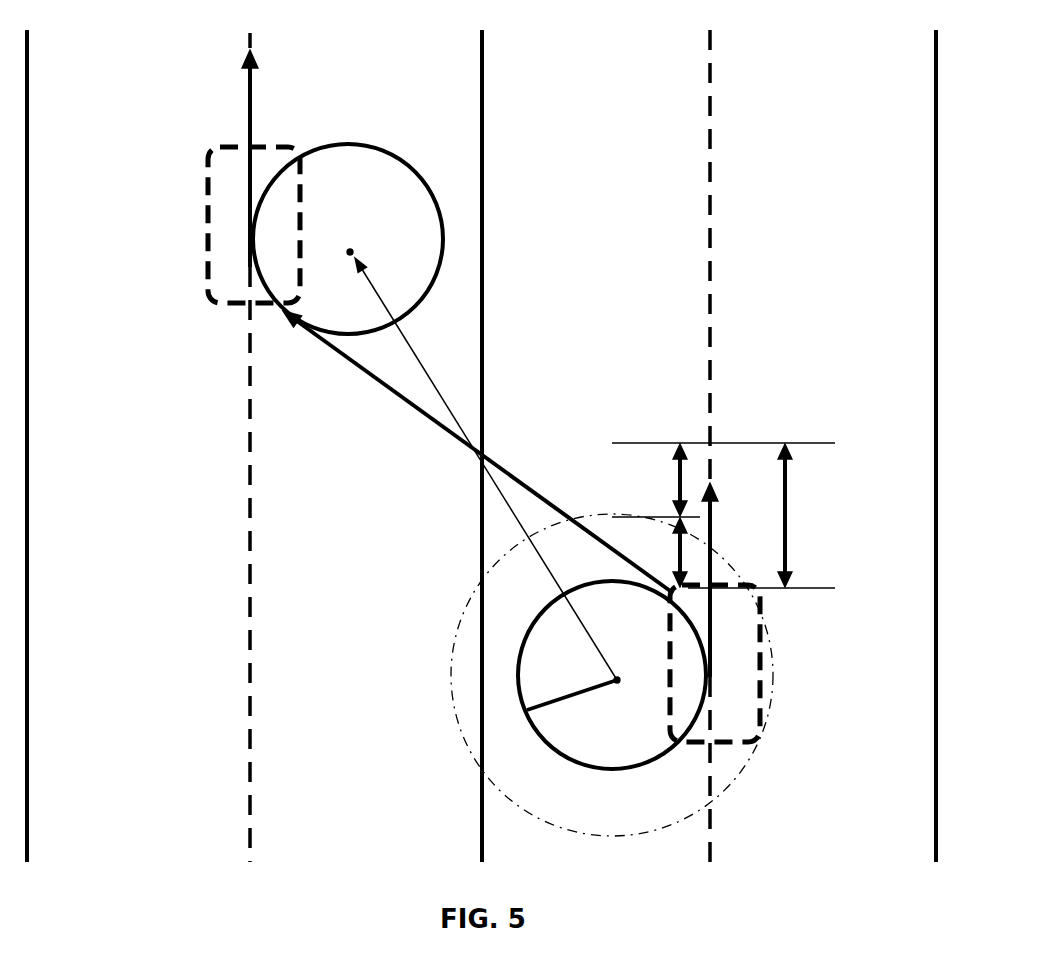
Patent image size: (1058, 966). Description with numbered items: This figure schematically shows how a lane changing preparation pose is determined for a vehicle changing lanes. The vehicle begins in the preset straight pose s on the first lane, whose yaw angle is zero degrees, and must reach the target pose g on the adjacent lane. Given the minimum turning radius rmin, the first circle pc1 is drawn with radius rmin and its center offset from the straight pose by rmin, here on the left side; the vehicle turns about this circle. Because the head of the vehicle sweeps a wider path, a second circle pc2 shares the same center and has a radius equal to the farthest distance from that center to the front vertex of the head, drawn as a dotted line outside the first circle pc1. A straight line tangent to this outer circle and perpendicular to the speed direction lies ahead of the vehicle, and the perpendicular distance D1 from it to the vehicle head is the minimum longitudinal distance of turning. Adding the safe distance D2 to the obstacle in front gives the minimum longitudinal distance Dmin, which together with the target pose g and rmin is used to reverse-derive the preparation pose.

The target pose g is at (167, 176).
The preset straight pose s is at (804, 612).
The first circle pc1 is at (612, 675).
The second circle pc2 is at (348, 239).
The minimum turning radius rmin is at (612, 675).
The minimum longitudinal distance of turning D1 is at (652, 552).
The safe distance to the obstacle in front D2 is at (652, 480).
The minimum longitudinal distance between the vehicle and the obstacle in front Dmin is at (853, 515).